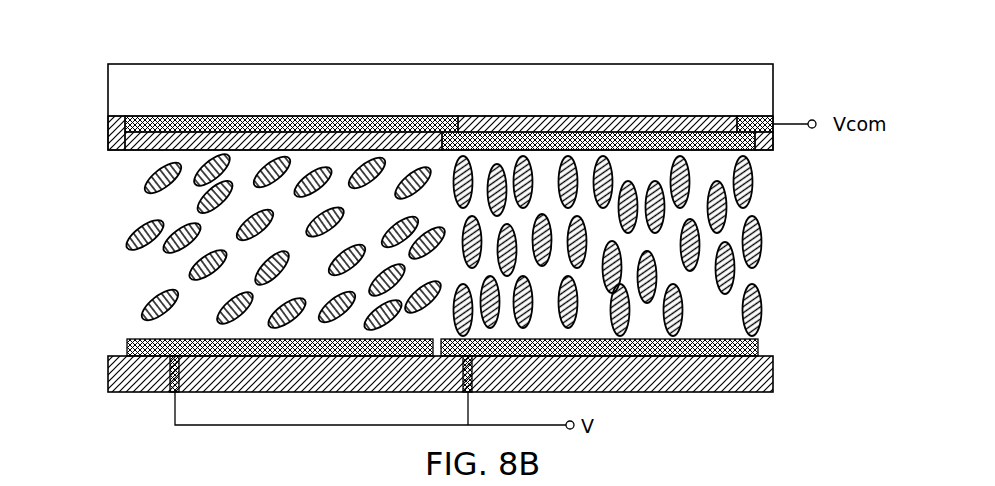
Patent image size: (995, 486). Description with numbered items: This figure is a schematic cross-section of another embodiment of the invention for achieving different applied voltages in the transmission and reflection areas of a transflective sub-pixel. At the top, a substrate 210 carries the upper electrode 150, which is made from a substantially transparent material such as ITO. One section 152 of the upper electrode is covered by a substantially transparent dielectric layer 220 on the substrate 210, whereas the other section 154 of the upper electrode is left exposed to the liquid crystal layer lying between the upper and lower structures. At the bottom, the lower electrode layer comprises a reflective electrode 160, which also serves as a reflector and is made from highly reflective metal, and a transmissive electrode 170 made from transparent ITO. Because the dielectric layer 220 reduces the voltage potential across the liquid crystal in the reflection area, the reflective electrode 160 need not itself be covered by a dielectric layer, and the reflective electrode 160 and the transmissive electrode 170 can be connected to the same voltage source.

The substrate 210 is at (188, 62).
The section of the upper electrode 152 is at (338, 118).
The section of the upper electrode 154 is at (618, 136).
The dielectric layer 220 is at (108, 142).
The upper electrode 150 is at (755, 168).
The reflective electrode 160 is at (126, 350).
The transmissive electrode 170 is at (758, 348).